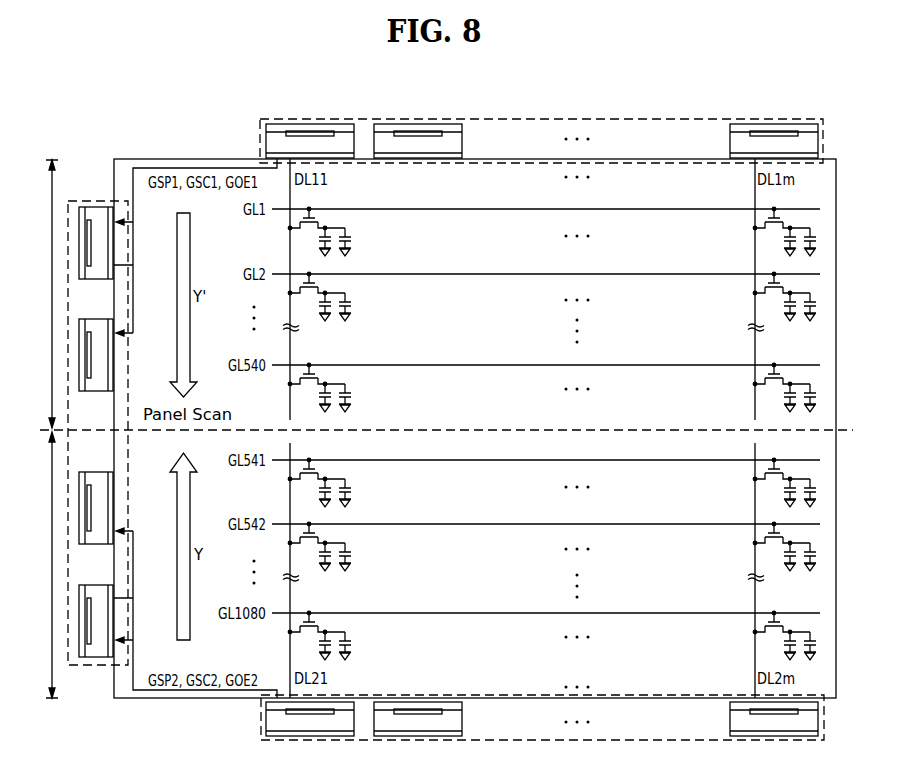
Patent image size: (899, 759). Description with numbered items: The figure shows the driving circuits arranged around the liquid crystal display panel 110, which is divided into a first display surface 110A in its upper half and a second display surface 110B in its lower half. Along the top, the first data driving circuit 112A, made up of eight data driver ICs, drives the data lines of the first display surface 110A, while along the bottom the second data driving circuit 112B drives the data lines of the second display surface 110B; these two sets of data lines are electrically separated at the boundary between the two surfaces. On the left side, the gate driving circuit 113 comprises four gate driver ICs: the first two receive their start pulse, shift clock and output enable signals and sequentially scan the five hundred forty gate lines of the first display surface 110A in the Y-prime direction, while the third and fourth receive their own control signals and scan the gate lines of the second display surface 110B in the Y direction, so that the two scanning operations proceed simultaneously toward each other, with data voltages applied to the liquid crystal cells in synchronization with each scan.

The liquid crystal display panel 110 is at (148, 158).
The first display surface 110A is at (36, 294).
The second display surface 110B is at (36, 565).
The first data driving circuit 112A is at (260, 142).
The second data driving circuit 112B is at (260, 719).
The gate driving circuit 113 is at (81, 200).